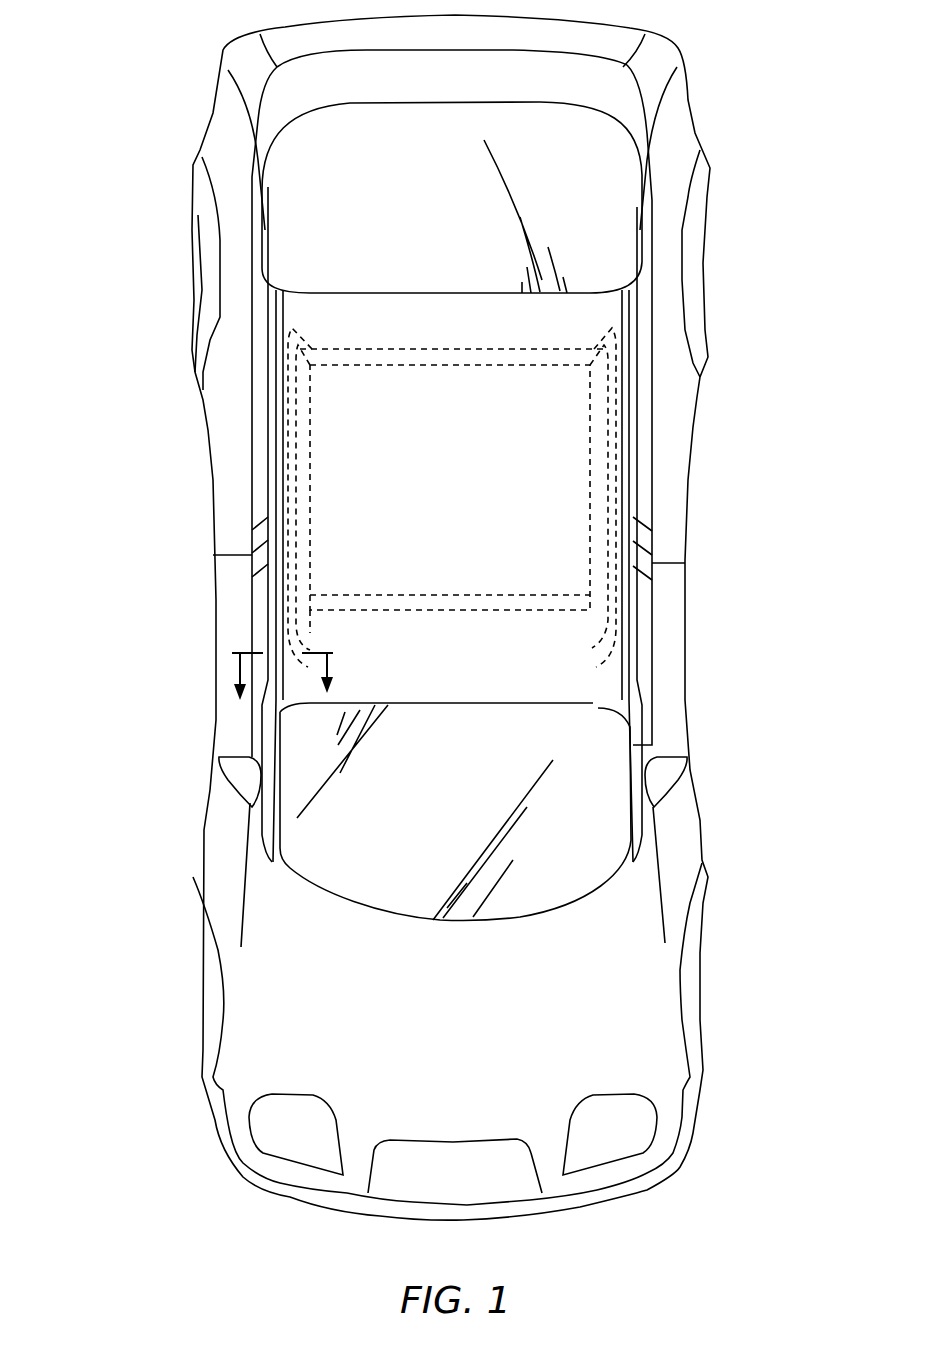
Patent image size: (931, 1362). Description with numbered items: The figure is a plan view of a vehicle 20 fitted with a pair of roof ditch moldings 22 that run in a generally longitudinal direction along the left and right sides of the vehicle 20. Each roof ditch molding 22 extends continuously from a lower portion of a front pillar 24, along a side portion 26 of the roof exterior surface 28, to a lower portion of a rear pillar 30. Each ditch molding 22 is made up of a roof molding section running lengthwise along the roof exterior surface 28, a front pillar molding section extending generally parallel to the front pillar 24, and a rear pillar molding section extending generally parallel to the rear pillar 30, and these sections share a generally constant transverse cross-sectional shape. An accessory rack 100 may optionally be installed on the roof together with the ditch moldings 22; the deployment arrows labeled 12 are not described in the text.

The vehicle 20 is at (116, 122).
The rear pillar 30 is at (253, 238).
The roof ditch molding 22 is at (277, 347).
The side portion of roof exterior surface 26 is at (273, 410).
The front pillar 24 is at (260, 833).
The roof exterior surface 28 is at (305, 665).
The accessory rack 100 is at (472, 584).
The deployment direction 12 is at (285, 661).